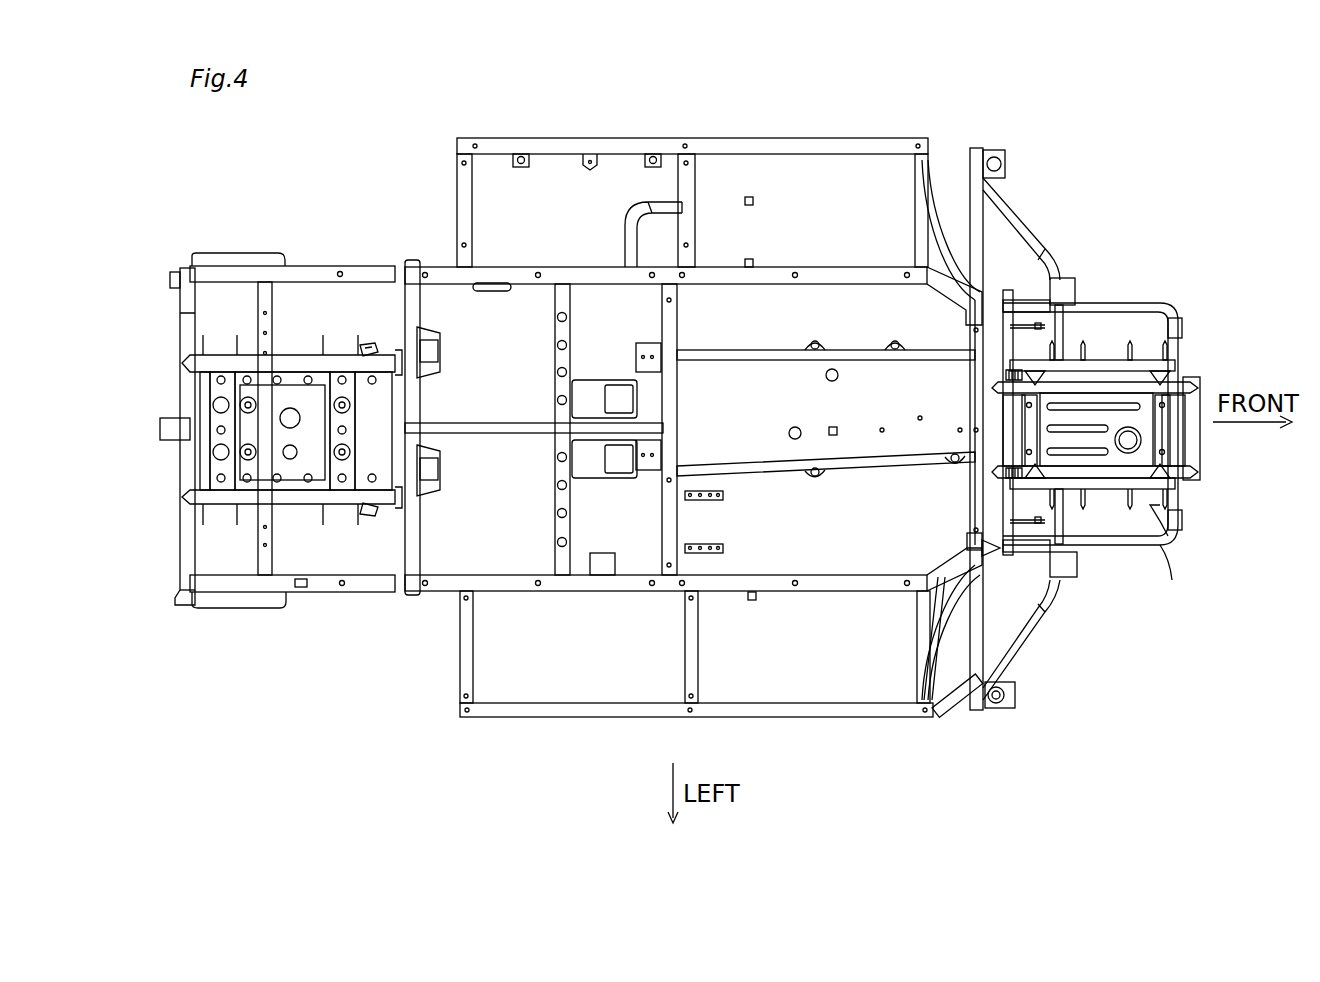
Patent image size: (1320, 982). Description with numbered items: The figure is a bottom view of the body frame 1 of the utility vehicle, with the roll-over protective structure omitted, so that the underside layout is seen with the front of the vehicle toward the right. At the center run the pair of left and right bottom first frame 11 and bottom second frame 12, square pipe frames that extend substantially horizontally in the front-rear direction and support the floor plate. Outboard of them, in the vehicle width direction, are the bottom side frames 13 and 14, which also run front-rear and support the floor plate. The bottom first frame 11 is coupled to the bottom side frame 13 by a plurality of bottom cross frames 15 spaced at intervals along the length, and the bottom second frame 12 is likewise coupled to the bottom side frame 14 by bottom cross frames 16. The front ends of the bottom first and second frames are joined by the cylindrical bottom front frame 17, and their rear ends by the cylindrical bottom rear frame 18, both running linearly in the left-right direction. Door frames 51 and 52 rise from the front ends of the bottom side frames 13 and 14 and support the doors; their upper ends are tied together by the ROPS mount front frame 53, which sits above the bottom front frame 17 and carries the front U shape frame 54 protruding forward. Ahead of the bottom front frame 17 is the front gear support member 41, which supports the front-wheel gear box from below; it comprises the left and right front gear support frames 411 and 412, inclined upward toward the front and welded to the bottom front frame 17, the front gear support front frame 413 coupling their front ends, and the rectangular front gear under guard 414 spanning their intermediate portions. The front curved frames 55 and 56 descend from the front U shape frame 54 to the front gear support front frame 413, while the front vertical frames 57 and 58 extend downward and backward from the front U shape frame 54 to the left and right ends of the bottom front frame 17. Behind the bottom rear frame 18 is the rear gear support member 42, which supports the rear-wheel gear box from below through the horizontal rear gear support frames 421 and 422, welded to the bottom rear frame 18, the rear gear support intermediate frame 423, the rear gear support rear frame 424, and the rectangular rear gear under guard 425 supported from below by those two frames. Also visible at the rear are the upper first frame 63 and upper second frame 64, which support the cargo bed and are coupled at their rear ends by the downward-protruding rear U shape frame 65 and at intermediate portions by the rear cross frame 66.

The body frame 1 is at (1118, 188).
The bottom first frame 11 is at (528, 275).
The bottom second frame 12 is at (530, 592).
The bottom side frame 13 is at (736, 150).
The bottom side frame 14 is at (612, 708).
The bottom cross frames 15 is at (460, 172).
The bottom cross frames 16 is at (467, 670).
The bottom front frame 17 is at (987, 562).
The bottom rear frame 18 is at (412, 578).
The front gear support member 41 is at (1140, 333).
The front gear support frame 411 is at (1103, 387).
The front gear support frame 412 is at (1085, 445).
The front gear support front frame 413 is at (1197, 395).
The front gear under guard 414 is at (1107, 470).
The rear gear support member 42 is at (312, 333).
The rear gear support frame 421 is at (340, 360).
The rear gear support frame 422 is at (335, 503).
The rear gear support intermediate frame 423 is at (350, 480).
The rear gear support rear frame 424 is at (218, 482).
The rear gear under guard 425 is at (272, 437).
The door frame 51 is at (975, 170).
The door frame 52 is at (957, 692).
The ROPS mount front frame 53 is at (995, 708).
The front U shape frame 54 is at (1018, 224).
The front curved frame 55 is at (1160, 310).
The front curved frame 56 is at (1155, 540).
The front vertical frame 57 is at (1033, 310).
The front vertical frame 58 is at (1053, 580).
The upper first frame 63 is at (318, 594).
The upper second frame 64 is at (285, 275).
The rear U shape frame 65 is at (188, 335).
The rear cross frame 66 is at (262, 290).